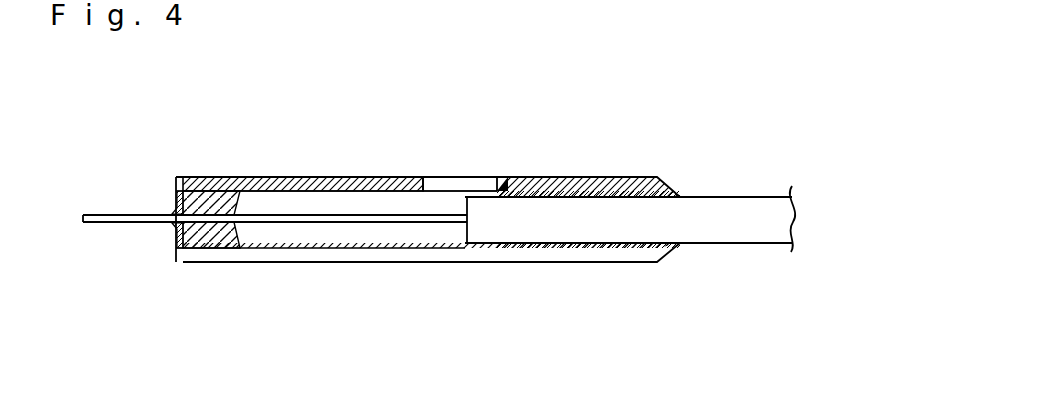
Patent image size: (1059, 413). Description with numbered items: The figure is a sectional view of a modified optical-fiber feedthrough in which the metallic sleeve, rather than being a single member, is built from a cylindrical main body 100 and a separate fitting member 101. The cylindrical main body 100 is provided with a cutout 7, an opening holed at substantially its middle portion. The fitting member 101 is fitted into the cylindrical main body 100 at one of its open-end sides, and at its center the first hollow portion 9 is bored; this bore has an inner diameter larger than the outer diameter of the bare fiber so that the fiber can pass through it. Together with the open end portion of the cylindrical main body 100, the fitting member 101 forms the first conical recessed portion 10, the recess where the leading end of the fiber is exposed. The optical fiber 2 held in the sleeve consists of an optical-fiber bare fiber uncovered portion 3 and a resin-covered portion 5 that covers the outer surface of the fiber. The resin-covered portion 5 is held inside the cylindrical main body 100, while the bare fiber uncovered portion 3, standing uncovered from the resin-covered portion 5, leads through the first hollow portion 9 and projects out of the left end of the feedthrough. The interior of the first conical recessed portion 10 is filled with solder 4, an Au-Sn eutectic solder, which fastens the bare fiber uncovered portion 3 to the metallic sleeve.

The optical fiber 2 is at (713, 194).
The optical-fiber bare fiber uncovered portion 3 is at (93, 214).
The solder 4 is at (172, 208).
The resin-covered portion 5 is at (768, 197).
The cutout 7 is at (455, 185).
The first hollow portion 9 is at (227, 263).
The first conical recessed portion 10 is at (192, 263).
The cylindrical main body 100 is at (373, 263).
The fitting member 101 is at (217, 187).